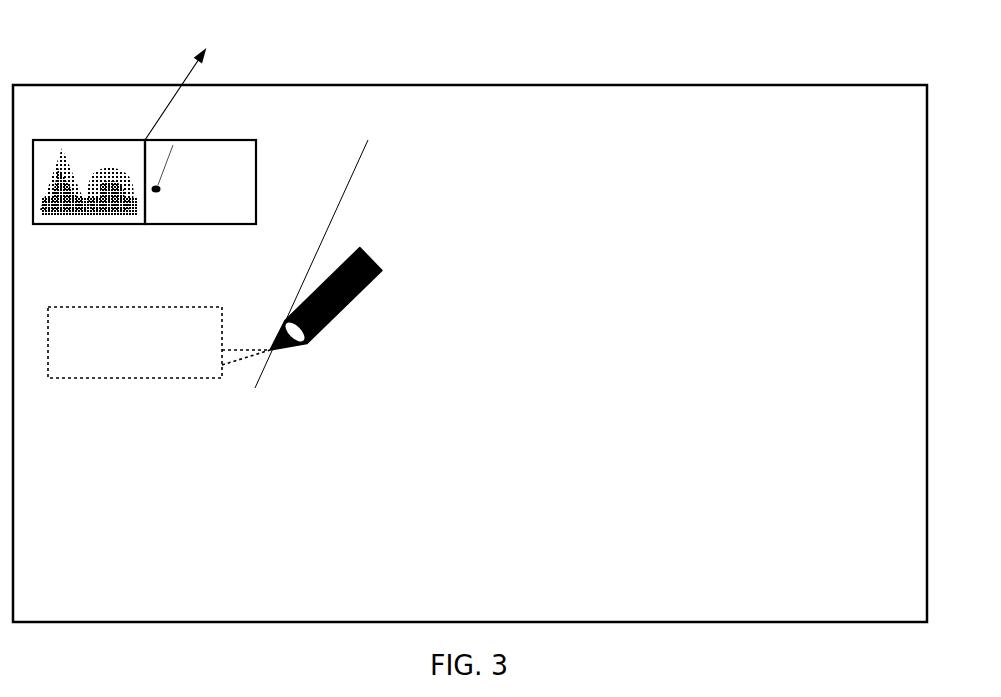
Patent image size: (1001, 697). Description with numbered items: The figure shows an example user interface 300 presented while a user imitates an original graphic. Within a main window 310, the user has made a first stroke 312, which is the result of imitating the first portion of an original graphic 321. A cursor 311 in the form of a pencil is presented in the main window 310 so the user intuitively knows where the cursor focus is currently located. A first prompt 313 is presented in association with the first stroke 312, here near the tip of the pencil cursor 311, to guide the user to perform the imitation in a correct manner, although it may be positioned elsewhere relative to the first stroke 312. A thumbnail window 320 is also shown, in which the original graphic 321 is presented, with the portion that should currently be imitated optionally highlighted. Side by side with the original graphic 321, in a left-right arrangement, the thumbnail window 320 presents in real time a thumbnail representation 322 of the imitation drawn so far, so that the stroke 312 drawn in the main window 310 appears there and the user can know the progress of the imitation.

The user interface 300 is at (72, 33).
The main window 310 is at (577, 85).
The cursor 311 is at (377, 255).
The first stroke 312 is at (363, 152).
The first prompt 313 is at (98, 380).
The thumbnail window 320 is at (185, 97).
The original graphic 321 is at (73, 200).
The thumbnail representation 322 is at (170, 178).